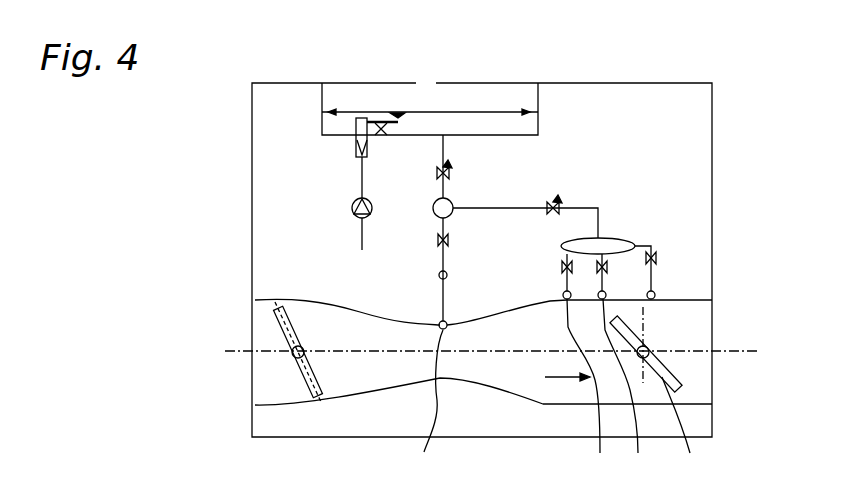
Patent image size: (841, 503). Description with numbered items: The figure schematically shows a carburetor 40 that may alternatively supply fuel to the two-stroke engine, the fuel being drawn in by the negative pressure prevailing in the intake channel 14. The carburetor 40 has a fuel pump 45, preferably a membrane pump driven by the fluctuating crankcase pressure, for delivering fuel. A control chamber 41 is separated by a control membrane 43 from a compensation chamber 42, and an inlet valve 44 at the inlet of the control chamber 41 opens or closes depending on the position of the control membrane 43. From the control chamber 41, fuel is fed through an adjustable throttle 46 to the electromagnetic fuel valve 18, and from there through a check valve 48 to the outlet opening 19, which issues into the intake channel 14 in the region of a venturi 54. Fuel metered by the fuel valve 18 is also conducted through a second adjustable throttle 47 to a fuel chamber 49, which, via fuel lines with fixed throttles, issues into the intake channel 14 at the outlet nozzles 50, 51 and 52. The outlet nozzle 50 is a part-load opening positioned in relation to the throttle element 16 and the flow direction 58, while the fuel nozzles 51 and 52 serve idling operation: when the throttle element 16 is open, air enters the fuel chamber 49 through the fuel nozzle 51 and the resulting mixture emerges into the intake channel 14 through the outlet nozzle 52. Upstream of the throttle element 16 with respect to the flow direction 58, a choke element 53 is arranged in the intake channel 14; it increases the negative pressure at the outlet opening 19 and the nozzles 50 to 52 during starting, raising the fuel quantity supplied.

The intake channel 14 is at (358, 373).
The throttle element 16 is at (658, 393).
The fuel valve 18 is at (453, 212).
The outlet opening 19 is at (424, 400).
The carburetor 40 is at (252, 145).
The control chamber 41 is at (325, 129).
The compensation chamber 42 is at (373, 92).
The control membrane 43 is at (462, 110).
The inlet valve 44 is at (357, 157).
The fuel pump 45 is at (352, 211).
The adjustable throttle 46 is at (452, 180).
The adjustable throttle 47 is at (560, 205).
The check valve 48 is at (438, 276).
The fuel chamber 49 is at (613, 243).
The outlet nozzle 50 is at (586, 391).
The fuel nozzle 51 is at (628, 388).
The outlet nozzle 52 is at (652, 300).
The choke element 53 is at (272, 319).
The venturi 54 is at (457, 376).
The flow direction 58 is at (567, 390).